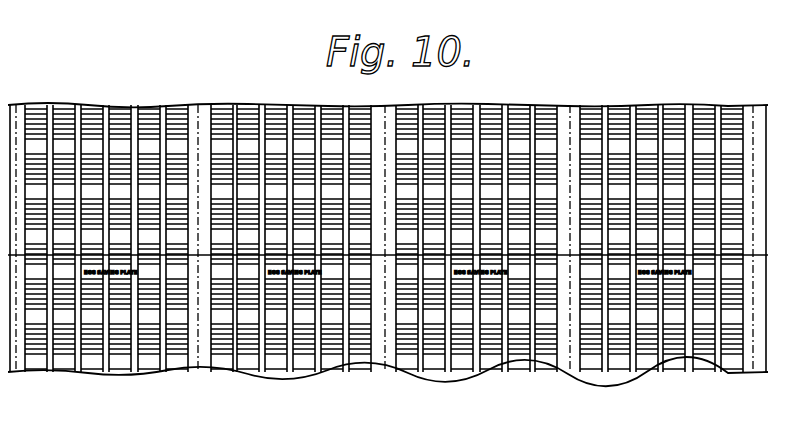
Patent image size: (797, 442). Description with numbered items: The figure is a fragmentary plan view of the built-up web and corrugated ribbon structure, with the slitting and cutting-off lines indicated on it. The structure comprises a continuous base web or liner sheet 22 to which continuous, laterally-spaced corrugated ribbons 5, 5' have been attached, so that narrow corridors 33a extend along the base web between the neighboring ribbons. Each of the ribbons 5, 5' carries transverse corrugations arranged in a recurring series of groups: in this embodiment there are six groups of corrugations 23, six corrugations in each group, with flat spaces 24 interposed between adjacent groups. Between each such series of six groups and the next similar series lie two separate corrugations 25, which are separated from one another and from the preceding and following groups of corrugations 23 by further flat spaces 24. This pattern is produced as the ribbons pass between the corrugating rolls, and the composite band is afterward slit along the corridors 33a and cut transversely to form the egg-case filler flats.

The base web 22 is at (2, 108).
The corrugated ribbon 5 is at (370, 256).
The corrugated ribbon 5' is at (425, 255).
The flat space 24 is at (217, 232).
The corridor 33a is at (680, 365).
The group of corrugations 23 is at (168, 125).
The separate corrugation 25 is at (696, 200).